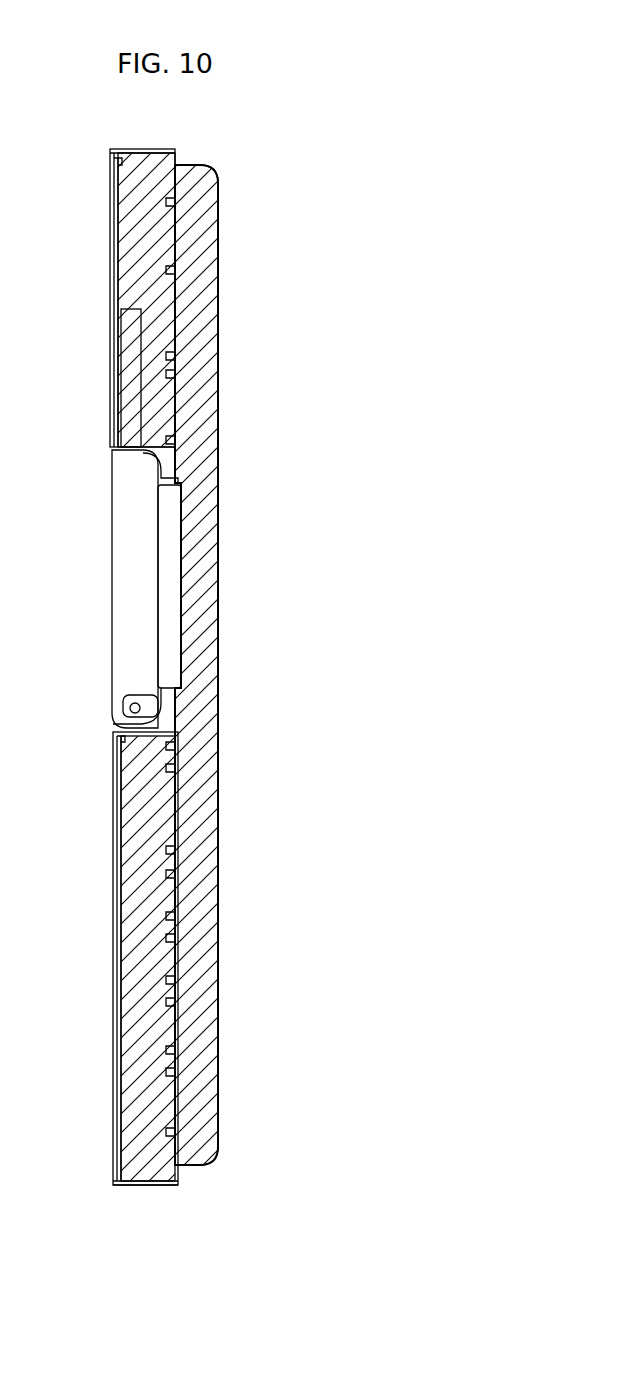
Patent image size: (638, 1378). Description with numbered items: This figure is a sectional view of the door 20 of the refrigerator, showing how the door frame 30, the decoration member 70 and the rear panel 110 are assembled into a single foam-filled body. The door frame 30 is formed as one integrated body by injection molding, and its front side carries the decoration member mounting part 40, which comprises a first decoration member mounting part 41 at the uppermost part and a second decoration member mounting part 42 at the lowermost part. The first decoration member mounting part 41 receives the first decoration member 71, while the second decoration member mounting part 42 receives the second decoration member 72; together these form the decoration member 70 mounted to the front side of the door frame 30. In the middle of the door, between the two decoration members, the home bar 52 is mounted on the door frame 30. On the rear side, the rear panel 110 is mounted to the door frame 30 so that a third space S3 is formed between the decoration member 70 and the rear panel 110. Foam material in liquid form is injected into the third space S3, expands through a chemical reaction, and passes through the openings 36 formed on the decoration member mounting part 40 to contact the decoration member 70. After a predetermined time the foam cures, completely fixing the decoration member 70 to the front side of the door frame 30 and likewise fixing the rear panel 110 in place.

The door 20 is at (236, 163).
The door frame 30 is at (146, 1185).
The openings 36 is at (116, 203).
The decoration member mounting part 40 is at (100, 667).
The first decoration member mounting part 41 is at (112, 168).
The second decoration member mounting part 42 is at (115, 1160).
The home bar 52 is at (112, 576).
The decoration member 70 is at (98, 667).
The first decoration member 71 is at (118, 316).
The second decoration member 72 is at (120, 968).
The rear panel 110 is at (218, 425).
The third space S3 is at (153, 249).